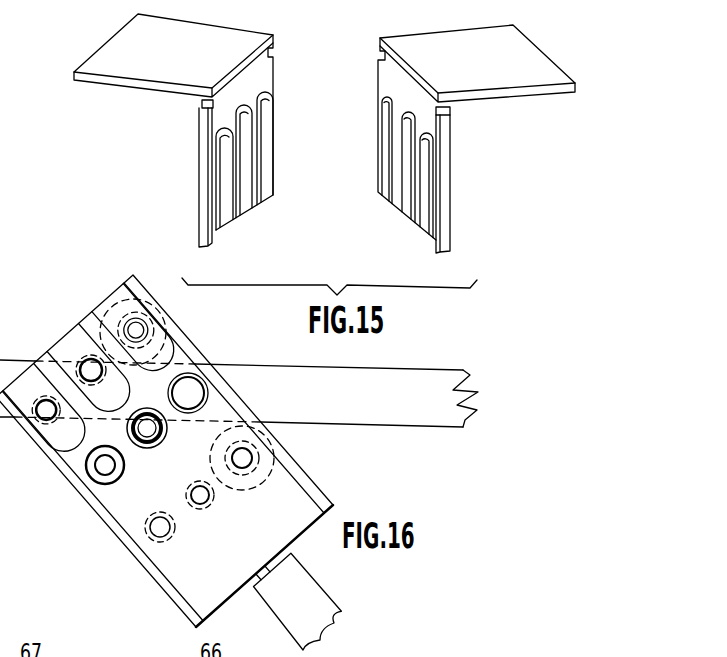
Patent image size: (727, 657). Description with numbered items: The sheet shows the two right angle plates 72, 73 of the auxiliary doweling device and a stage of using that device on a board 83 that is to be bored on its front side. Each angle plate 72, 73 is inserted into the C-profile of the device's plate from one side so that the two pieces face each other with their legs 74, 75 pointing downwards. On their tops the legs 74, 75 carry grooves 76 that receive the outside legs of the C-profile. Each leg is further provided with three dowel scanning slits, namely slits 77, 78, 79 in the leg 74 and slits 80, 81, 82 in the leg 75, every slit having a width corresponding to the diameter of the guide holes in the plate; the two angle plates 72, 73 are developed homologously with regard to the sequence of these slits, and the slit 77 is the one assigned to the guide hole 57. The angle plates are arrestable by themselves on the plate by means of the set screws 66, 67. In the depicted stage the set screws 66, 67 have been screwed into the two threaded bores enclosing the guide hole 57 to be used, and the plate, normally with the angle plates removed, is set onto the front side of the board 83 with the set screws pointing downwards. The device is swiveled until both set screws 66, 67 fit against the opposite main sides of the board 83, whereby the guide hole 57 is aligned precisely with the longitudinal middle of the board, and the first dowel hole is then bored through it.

In FIG. 15, the angle plate 72 is at (459, 151).
In FIG. 15, the angle plate 73 is at (193, 145).
In FIG. 15, the leg 74 is at (447, 246).
In FIG. 15, the leg 75 is at (201, 215).
In FIG. 15, the groove 76 is at (383, 60).
In FIG. 15, the dowel scanning slit 77 is at (428, 235).
In FIG. 15, the dowel scanning slit 78 is at (410, 219).
In FIG. 15, the dowel scanning slit 79 is at (384, 196).
In FIG. 15, the dowel scanning slit 80 is at (221, 233).
In FIG. 15, the dowel scanning slit 81 is at (244, 218).
In FIG. 15, the dowel scanning slit 82 is at (266, 200).
In FIG. 16, the board 83 is at (388, 385).
In FIG. 16, the guide hole 57 is at (190, 388).
In FIG. 16, the set screw 66 is at (270, 459).
In FIG. 16, the set screw 67 is at (110, 307).